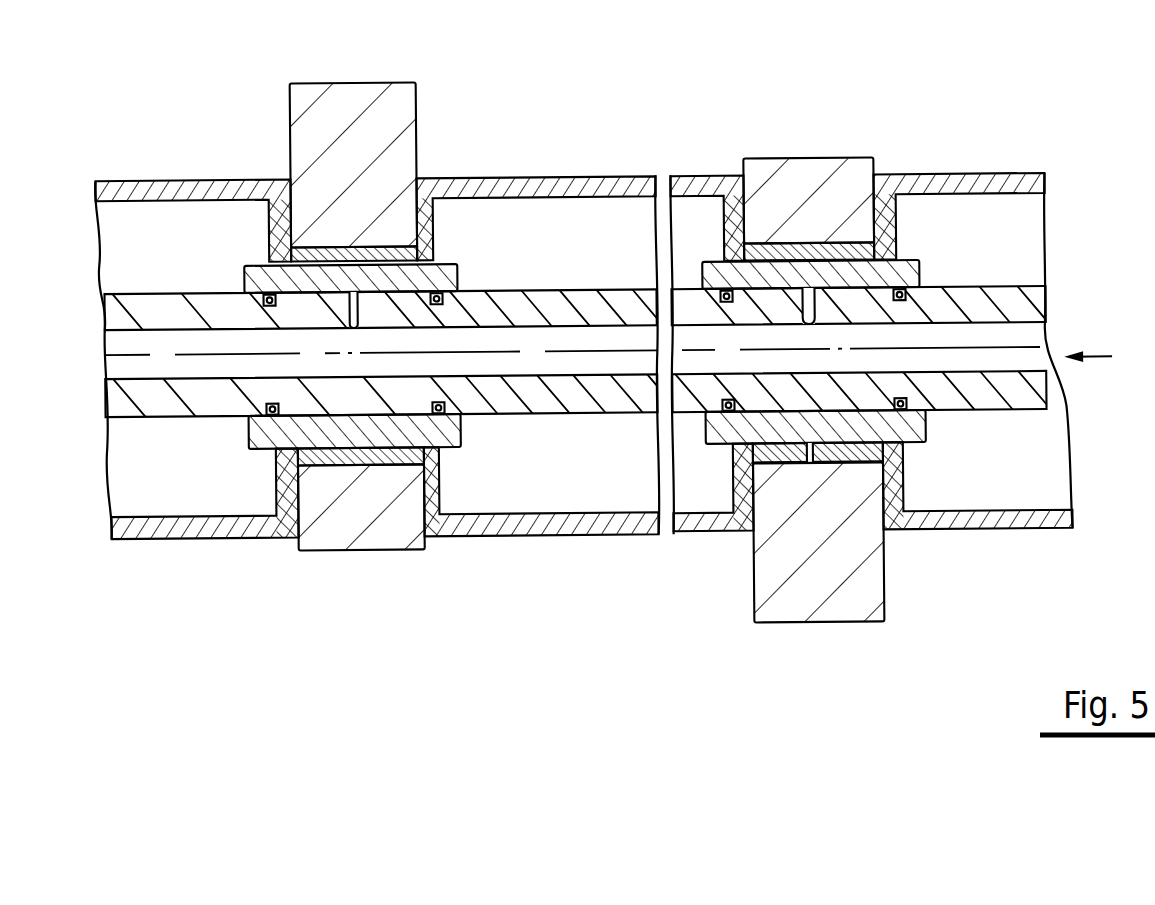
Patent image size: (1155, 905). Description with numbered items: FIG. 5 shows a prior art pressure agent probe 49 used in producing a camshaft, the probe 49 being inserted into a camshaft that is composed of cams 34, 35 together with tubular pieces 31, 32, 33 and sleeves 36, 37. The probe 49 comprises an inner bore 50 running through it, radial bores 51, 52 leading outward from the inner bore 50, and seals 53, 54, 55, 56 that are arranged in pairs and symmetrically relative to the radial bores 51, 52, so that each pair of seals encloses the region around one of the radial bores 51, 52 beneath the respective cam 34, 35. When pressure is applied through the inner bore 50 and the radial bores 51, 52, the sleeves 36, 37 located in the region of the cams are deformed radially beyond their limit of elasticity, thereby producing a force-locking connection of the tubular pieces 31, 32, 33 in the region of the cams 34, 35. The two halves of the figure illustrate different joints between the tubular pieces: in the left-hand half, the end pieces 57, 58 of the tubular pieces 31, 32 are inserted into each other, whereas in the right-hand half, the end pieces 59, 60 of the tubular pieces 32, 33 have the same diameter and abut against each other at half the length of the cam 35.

The tubular piece 31 is at (191, 176).
The tubular piece 32 is at (565, 176).
The tubular piece 33 is at (962, 178).
The cam 34 is at (328, 530).
The cam 35 is at (795, 598).
The sleeve 36 is at (393, 438).
The sleeve 37 is at (850, 430).
The pressure agent probe 49 is at (613, 402).
The inner bore 50 is at (528, 362).
The radial bore 51 is at (352, 300).
The radial bore 52 is at (808, 305).
The seal 53 is at (270, 412).
The seal 54 is at (440, 412).
The seal 55 is at (728, 412).
The seal 56 is at (905, 412).
The end piece 57 is at (322, 245).
The end piece 58 is at (375, 245).
The end piece 59 is at (775, 252).
The end piece 60 is at (842, 252).